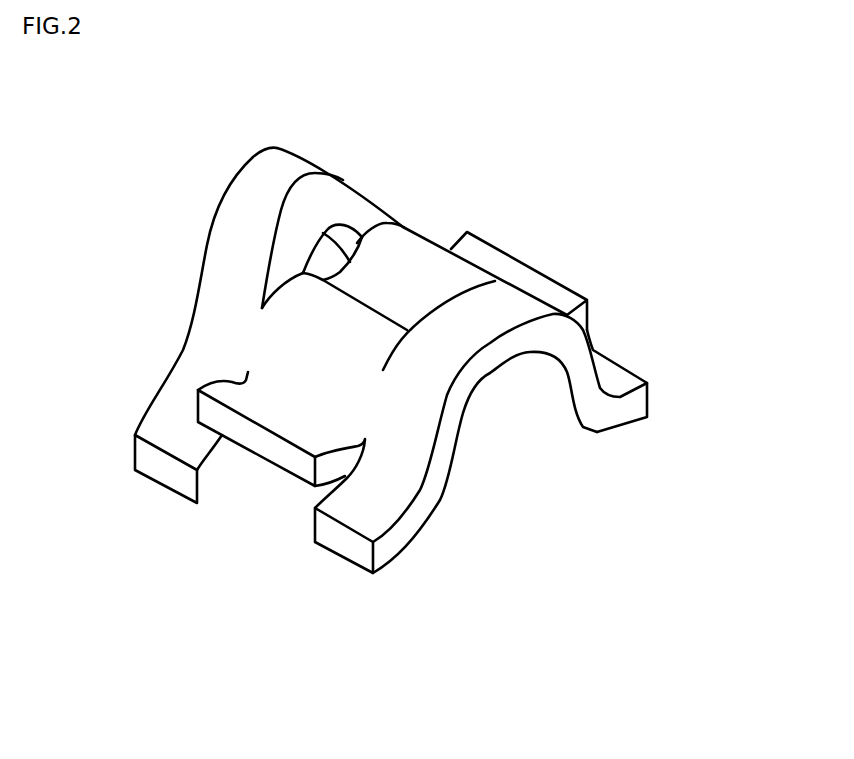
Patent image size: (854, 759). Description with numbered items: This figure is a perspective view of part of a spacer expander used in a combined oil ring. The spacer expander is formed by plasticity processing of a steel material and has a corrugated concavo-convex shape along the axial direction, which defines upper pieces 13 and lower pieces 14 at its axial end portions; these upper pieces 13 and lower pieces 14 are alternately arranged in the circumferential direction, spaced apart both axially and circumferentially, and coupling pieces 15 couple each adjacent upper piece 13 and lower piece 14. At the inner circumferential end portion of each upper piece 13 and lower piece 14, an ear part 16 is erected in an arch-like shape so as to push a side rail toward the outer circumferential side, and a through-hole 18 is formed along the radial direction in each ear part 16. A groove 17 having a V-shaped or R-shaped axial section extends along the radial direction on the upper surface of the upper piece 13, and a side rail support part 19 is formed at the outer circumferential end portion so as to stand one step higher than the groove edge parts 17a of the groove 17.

The upper piece 13 is at (508, 347).
The lower piece 14 is at (397, 548).
The coupling piece 15 is at (443, 460).
The ear part 16 is at (292, 163).
The groove 17 is at (378, 282).
The groove edge part 17a is at (432, 253).
The through-hole 18 is at (348, 233).
The side rail support part 19 is at (503, 297).